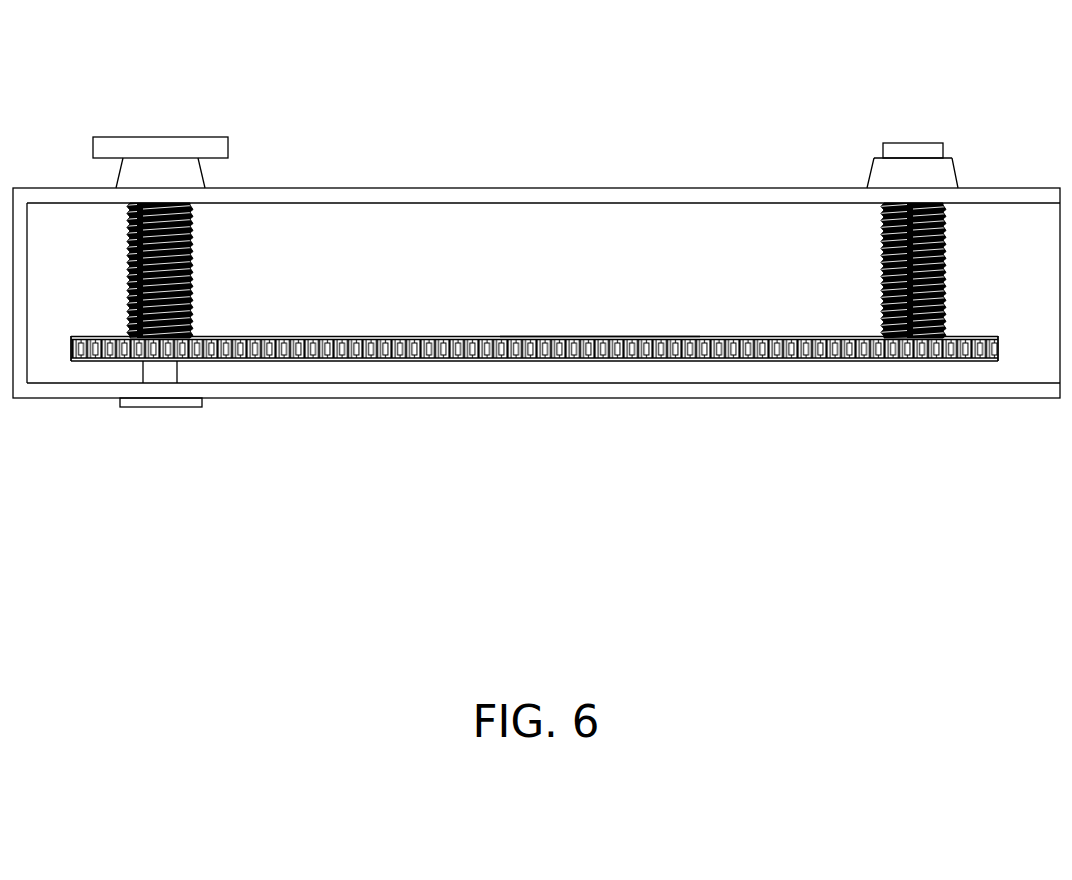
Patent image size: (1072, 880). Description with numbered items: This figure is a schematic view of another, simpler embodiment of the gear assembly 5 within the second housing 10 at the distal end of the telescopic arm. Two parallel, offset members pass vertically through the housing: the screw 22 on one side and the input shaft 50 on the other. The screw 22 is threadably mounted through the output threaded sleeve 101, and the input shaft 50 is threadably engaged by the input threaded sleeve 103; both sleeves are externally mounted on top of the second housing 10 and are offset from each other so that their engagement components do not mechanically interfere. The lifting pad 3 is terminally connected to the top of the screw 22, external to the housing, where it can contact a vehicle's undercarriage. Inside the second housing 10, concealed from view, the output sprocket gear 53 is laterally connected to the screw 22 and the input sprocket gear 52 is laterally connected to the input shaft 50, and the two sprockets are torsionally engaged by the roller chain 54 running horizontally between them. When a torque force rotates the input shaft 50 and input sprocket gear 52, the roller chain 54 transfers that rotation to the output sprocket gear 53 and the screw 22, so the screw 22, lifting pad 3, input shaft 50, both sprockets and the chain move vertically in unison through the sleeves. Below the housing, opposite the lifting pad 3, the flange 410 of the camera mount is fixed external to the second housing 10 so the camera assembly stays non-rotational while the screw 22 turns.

The lifting pad 3 is at (163, 141).
The gear assembly 5 is at (520, 277).
The second housing 10 is at (552, 195).
The screw 22 is at (192, 282).
The input shaft 50 is at (880, 283).
The input sprocket gear 52 is at (967, 328).
The output sprocket gear 53 is at (112, 328).
The roller chain 54 is at (610, 337).
The output threaded sleeve 101 is at (208, 183).
The input threaded sleeve 103 is at (874, 178).
The flange 410 is at (160, 407).